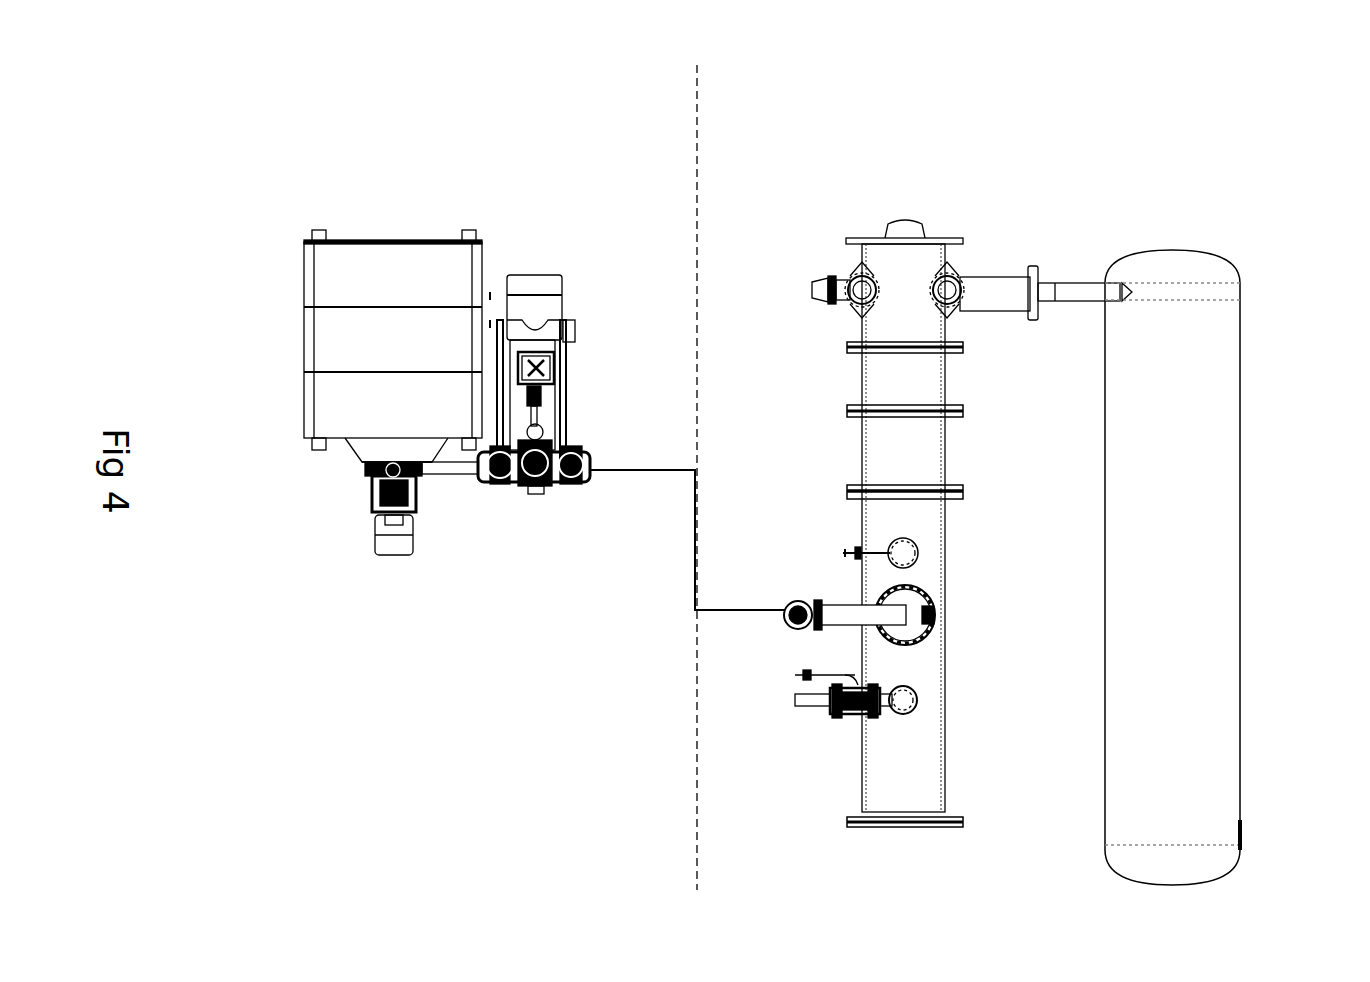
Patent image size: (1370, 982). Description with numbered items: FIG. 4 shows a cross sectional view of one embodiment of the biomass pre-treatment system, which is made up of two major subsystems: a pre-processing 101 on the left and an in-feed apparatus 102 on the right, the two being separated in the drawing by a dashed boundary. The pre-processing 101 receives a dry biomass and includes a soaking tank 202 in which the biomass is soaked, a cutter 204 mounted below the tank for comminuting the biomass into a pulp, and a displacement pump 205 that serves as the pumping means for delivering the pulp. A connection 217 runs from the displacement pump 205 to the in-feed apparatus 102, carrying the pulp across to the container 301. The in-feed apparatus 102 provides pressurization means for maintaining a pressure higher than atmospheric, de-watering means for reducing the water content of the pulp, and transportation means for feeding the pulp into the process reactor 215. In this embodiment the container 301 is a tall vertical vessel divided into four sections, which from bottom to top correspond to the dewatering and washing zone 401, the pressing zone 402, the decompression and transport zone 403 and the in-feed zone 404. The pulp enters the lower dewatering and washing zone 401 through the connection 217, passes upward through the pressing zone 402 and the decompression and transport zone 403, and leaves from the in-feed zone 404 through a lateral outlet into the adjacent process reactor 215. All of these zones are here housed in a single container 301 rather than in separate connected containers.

The pre-processing 101 is at (455, 205).
The in-feed apparatus 102 is at (862, 190).
The soaking tank 202 is at (328, 345).
The cutter 204 is at (368, 487).
The displacement pump 205 is at (552, 297).
The process reactor 215 is at (1195, 264).
The connection 217 is at (680, 577).
The container 301 is at (857, 781).
The dewatering and washing zone 401 is at (925, 577).
The pressing zone 402 is at (923, 453).
The decompression and transport zone 403 is at (922, 383).
The in-feed zone 404 is at (935, 265).